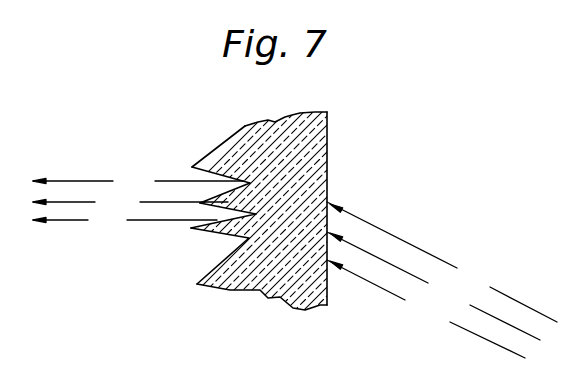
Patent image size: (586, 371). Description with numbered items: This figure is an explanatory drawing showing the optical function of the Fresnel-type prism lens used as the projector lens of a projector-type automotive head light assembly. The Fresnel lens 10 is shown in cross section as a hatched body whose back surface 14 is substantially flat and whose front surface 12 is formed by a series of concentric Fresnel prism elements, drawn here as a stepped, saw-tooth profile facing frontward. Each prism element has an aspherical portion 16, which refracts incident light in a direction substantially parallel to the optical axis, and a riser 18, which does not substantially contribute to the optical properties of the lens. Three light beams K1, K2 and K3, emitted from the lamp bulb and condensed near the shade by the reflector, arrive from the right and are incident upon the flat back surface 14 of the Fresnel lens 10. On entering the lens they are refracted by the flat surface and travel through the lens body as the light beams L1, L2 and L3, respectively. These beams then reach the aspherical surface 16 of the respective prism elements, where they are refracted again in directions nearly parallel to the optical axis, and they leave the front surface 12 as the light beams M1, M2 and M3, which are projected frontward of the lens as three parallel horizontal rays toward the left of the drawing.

The Fresnel lens 10 is at (314, 157).
The front surface 12 is at (227, 292).
The back surface 14 is at (329, 114).
The aspherical portion 16 is at (222, 196).
The riser 18 is at (212, 235).
The light beam L1 is at (250, 183).
The light beam L2 is at (256, 214).
The light beam L3 is at (249, 238).
The light beam M1 is at (138, 181).
The light beam M2 is at (130, 201).
The light beam M3 is at (125, 223).
The light beam K1 is at (442, 262).
The light beam K2 is at (433, 286).
The light beam K3 is at (426, 309).